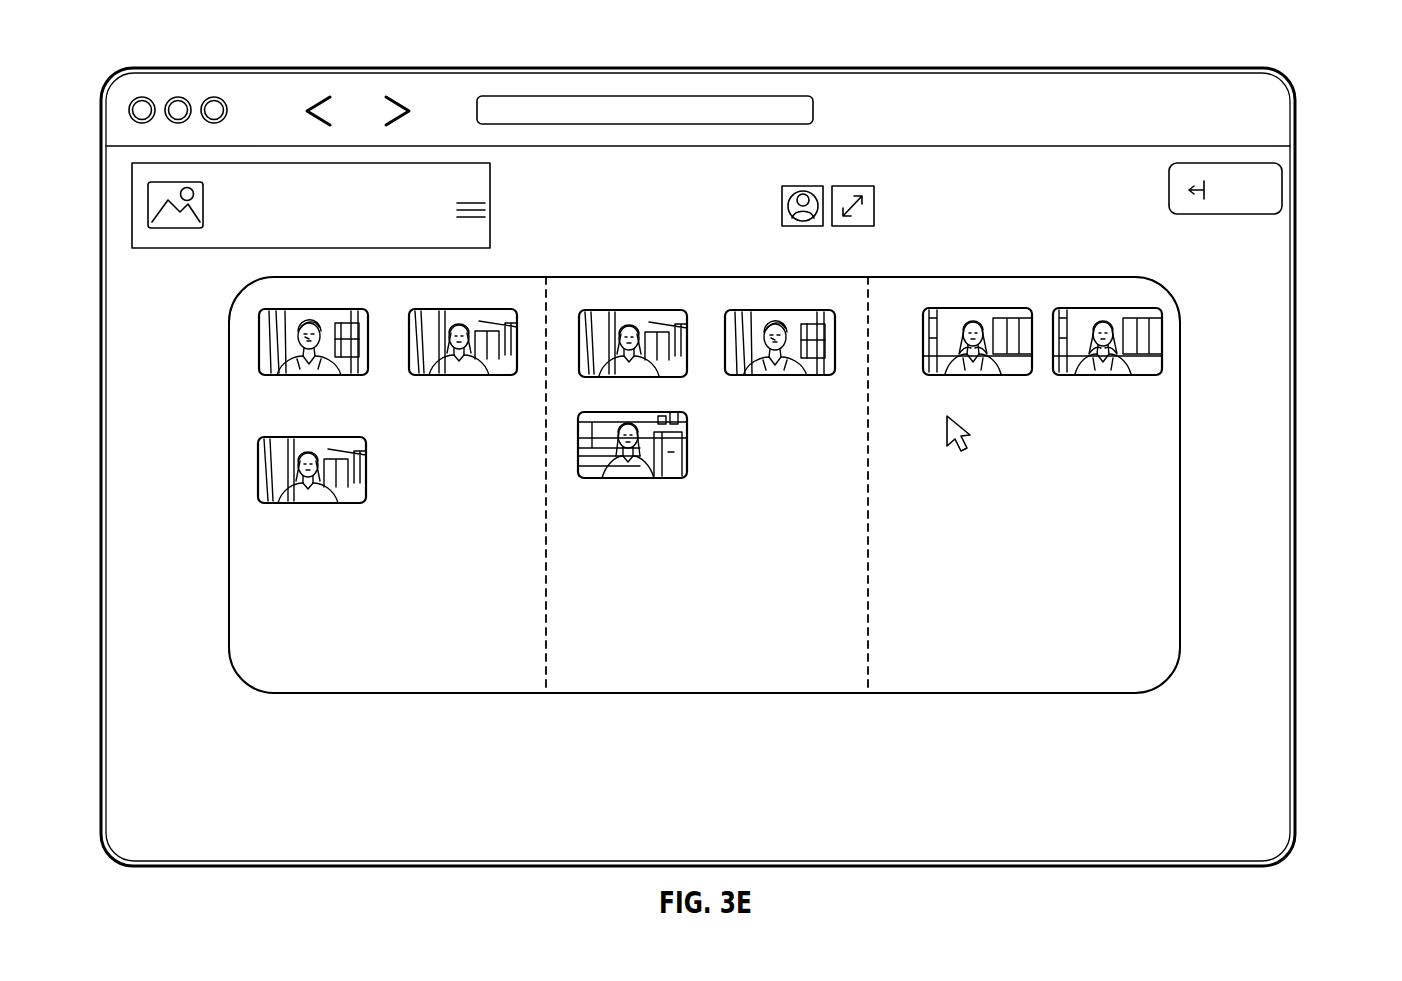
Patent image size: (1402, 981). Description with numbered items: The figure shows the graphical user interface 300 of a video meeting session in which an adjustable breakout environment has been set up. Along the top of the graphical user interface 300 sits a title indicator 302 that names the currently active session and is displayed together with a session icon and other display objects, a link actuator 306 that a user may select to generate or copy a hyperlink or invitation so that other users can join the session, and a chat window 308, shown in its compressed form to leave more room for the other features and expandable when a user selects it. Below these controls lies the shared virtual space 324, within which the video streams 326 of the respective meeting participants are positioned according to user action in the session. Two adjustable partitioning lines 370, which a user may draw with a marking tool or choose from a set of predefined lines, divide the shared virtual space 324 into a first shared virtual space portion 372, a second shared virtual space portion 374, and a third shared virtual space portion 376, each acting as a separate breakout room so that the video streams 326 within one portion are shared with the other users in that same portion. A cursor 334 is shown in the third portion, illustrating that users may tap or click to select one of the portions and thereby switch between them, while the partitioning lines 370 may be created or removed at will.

The graphical user interface 300 is at (137, 66).
The title indicator 302 is at (132, 207).
The link actuator 306 is at (846, 186).
The chat window 308 is at (1282, 195).
The shared virtual space 324 is at (229, 430).
The video streams 326 is at (264, 318).
The cursor 334 is at (977, 430).
The adjustable partitioning lines 370 is at (546, 572).
The first shared virtual space portion 372 is at (388, 672).
The second shared virtual space portion 374 is at (720, 663).
The third shared virtual space portion 376 is at (1017, 664).